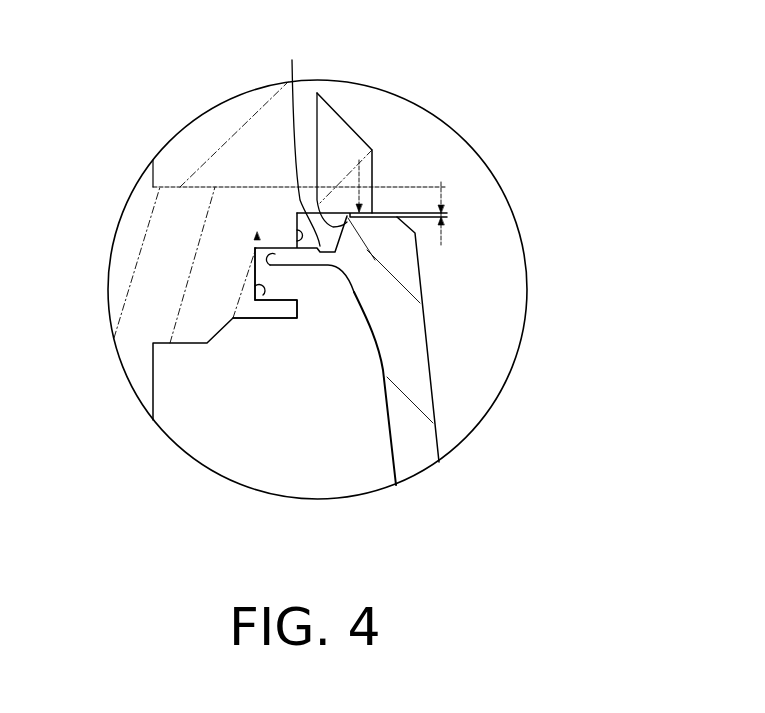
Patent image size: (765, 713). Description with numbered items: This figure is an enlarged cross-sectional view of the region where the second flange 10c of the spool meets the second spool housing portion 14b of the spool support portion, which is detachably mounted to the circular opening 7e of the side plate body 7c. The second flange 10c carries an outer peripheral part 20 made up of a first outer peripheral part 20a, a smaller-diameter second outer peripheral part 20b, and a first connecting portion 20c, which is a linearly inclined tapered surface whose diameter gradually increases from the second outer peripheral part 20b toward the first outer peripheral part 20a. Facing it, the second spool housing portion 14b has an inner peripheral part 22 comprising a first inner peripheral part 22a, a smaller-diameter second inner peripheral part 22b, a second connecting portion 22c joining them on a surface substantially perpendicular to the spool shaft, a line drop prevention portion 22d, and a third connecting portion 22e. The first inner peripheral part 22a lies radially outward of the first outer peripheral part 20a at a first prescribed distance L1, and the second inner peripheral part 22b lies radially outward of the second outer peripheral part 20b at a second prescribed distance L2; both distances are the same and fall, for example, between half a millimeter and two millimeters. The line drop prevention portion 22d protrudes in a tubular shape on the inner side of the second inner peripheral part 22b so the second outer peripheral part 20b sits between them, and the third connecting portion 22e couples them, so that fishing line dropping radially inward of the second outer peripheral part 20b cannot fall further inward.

The side plate body 7c is at (251, 427).
The circular opening 7e is at (267, 247).
The outer peripheral part 20 is at (374, 155).
The first outer peripheral part 20a is at (383, 212).
The second outer peripheral part 20b is at (297, 240).
The first connecting portion 20c is at (317, 93).
The first prescribed distance L1 is at (442, 185).
The second prescribed distance L2 is at (255, 222).
The inner peripheral part 22 is at (347, 227).
The first inner peripheral part 22a is at (347, 245).
The second inner peripheral part 22b is at (255, 285).
The second connecting portion 22c is at (257, 246).
The line drop prevention portion 22d is at (275, 320).
The third connecting portion 22e is at (263, 288).
The second spool housing portion 14b is at (311, 266).
The second flange 10c is at (437, 358).